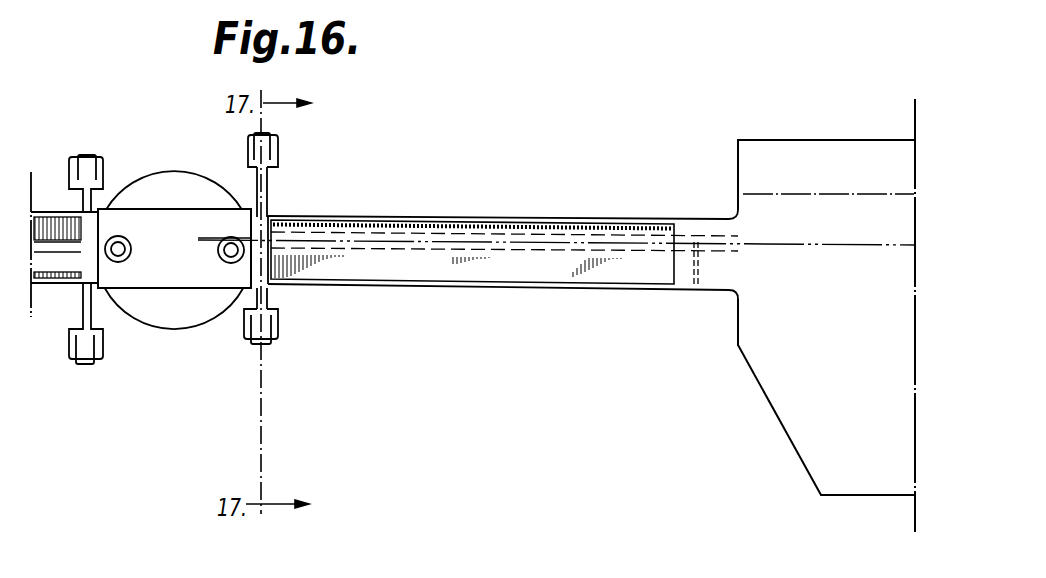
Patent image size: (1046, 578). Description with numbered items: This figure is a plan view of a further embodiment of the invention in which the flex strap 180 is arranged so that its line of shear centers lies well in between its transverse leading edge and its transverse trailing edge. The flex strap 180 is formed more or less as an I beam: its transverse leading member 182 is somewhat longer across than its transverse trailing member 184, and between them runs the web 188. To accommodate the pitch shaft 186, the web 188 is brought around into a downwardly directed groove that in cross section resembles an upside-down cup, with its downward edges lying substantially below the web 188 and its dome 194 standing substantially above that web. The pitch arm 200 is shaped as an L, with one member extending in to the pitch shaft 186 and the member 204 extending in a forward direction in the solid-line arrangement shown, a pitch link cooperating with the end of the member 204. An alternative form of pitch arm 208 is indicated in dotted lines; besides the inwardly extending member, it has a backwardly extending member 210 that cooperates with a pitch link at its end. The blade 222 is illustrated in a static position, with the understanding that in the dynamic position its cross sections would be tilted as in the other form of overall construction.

The flex strap 180 is at (449, 185).
The transverse leading member 182 is at (510, 215).
The transverse trailing member 184 is at (505, 288).
The pitch shaft 186 is at (686, 234).
The web 188 is at (588, 275).
The dome 194 is at (462, 232).
The pitch arm 200 is at (345, 151).
The member 204 is at (268, 185).
The pitch arm 208 is at (350, 347).
The member 210 is at (265, 297).
The blade 222 is at (770, 137).